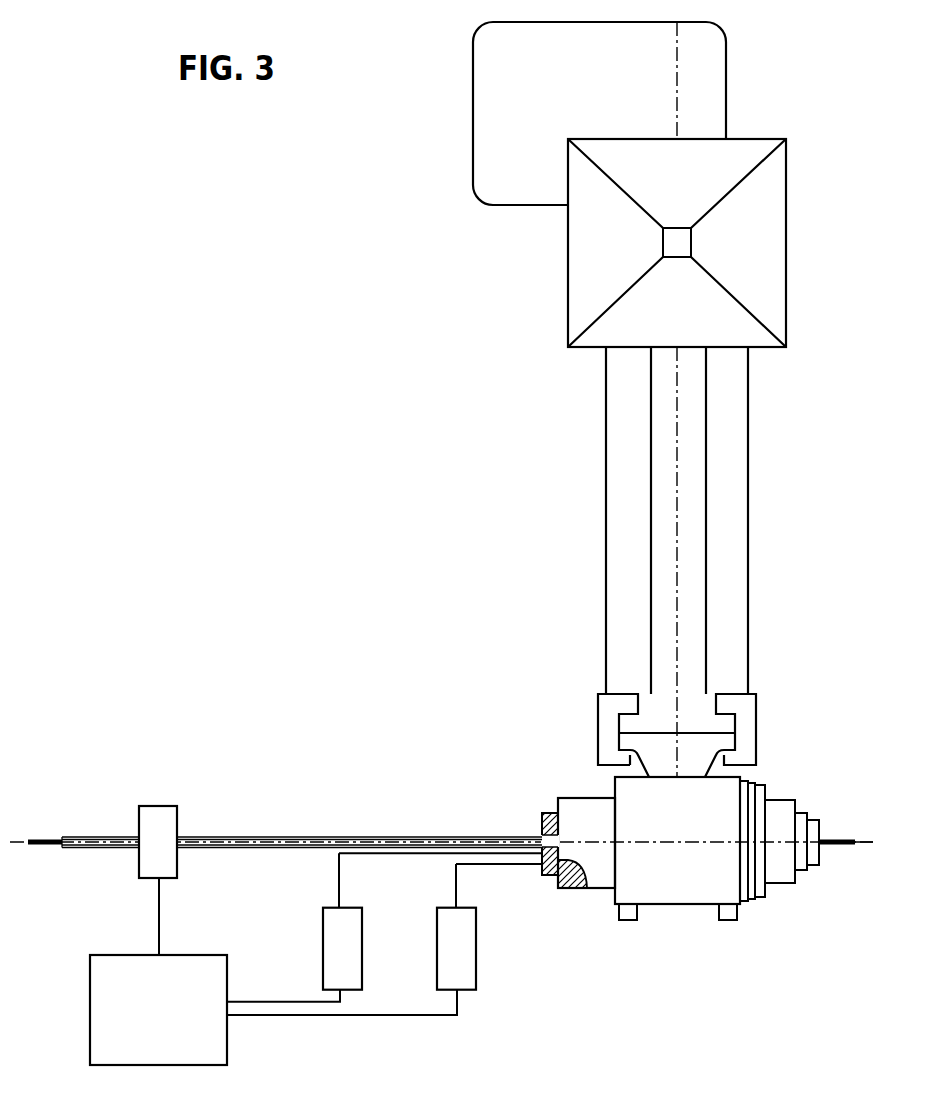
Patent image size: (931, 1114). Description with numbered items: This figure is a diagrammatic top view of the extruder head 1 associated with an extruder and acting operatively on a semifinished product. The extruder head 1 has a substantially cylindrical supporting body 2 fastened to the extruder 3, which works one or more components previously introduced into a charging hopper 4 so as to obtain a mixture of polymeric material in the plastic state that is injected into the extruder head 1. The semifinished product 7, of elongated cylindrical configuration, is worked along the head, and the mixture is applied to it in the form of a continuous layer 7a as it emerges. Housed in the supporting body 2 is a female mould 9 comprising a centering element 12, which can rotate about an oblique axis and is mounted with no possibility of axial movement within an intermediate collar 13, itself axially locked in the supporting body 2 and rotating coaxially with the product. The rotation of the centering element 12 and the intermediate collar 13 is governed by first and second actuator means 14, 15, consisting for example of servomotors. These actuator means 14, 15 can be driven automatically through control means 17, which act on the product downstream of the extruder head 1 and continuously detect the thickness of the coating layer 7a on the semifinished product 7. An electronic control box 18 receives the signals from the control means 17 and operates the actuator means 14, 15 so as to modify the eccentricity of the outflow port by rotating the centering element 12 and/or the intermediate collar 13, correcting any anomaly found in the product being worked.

The extruder head 1 is at (653, 856).
The supporting body 2 is at (730, 803).
The extruder 3 is at (607, 503).
The charging hopper 4 is at (577, 247).
The semifinished product 7 is at (43, 840).
The continuous layer 7a is at (100, 850).
The female mould 9 is at (557, 797).
The centering element 12 is at (540, 815).
The intermediate collar 13 is at (579, 818).
The first actuator means 14 is at (294, 955).
The second actuator means 15 is at (351, 961).
The control means 17 is at (158, 842).
The electronic control box 18 is at (158, 971).